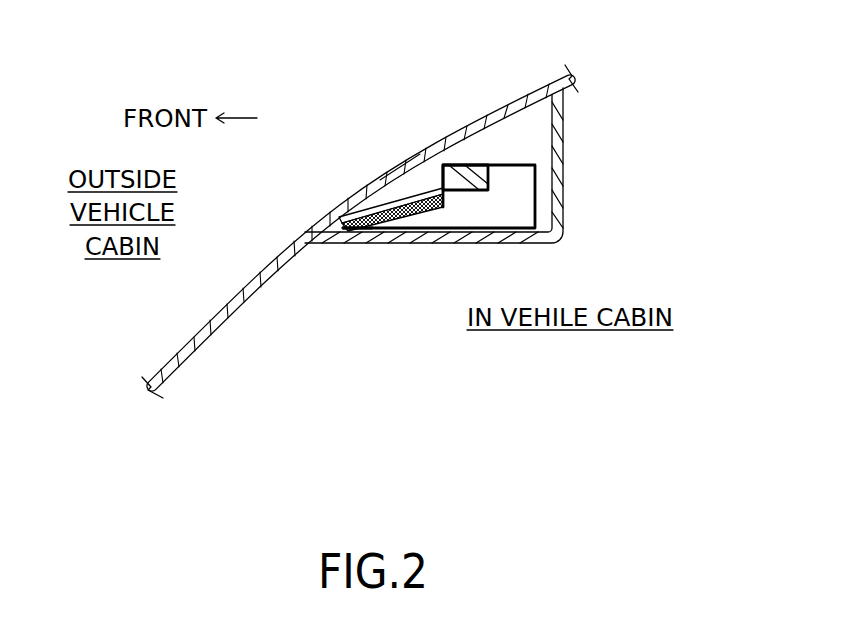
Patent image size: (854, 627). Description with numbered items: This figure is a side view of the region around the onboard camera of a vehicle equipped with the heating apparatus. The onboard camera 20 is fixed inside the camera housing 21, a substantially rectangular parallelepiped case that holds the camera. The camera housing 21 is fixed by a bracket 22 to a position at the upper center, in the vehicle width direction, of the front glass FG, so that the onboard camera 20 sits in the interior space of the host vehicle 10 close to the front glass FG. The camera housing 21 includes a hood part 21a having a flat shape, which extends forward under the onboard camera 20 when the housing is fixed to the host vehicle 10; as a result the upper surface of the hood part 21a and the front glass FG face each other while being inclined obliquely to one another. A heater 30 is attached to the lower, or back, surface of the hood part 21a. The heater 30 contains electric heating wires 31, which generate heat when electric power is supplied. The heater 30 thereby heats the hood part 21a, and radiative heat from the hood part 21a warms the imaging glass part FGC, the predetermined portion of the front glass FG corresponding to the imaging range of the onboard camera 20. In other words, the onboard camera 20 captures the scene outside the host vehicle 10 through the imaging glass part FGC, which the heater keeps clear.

The host vehicle 10 is at (589, 110).
The onboard camera 20 is at (441, 181).
The camera housing 21 is at (505, 162).
The hood part 21a is at (340, 222).
The bracket 22 is at (563, 178).
The heater 30 is at (342, 226).
The electric heating wires 31 is at (375, 225).
The front glass FG is at (248, 283).
The imaging glass part FGC is at (398, 184).